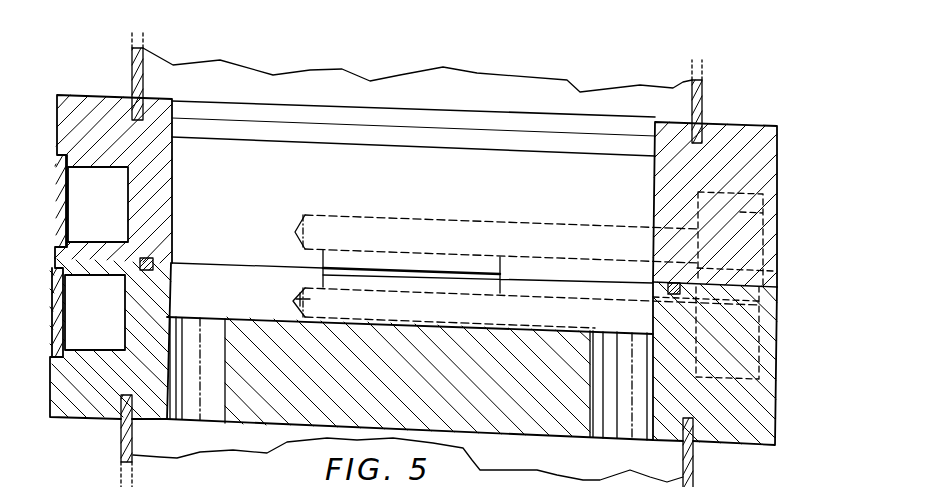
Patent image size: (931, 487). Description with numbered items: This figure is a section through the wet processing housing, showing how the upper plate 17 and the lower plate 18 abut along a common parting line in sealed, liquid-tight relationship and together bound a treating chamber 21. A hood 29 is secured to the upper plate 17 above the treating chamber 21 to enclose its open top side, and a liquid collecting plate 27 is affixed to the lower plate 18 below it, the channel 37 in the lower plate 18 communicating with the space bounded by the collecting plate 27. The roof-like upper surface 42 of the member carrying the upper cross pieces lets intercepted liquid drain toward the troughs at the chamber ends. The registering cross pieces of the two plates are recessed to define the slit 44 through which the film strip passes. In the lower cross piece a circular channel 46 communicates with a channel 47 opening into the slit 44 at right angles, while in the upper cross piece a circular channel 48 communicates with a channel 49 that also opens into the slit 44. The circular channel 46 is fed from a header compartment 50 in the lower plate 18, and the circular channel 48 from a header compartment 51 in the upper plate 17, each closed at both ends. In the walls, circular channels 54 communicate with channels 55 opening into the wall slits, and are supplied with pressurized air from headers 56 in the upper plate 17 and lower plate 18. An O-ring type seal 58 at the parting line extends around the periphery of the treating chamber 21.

The upper plate 17 is at (80, 125).
The lower plate 18 is at (80, 382).
The treating chamber 21 is at (248, 193).
The liquid collecting plate 27 is at (120, 447).
The hood 29 is at (130, 66).
The channel 37 is at (192, 318).
The upper surface 42 is at (431, 140).
The slit 44 is at (398, 270).
The circular channel 46 is at (296, 300).
The channel 47 is at (322, 281).
The circular channel 48 is at (535, 232).
The channel 49 is at (322, 258).
The header compartment 50 is at (738, 331).
The header compartment 51 is at (777, 206).
The circular channel 54 is at (279, 482).
The channel 55 is at (192, 483).
The header 56 is at (88, 204).
The O-ring type seal 58 is at (150, 262).